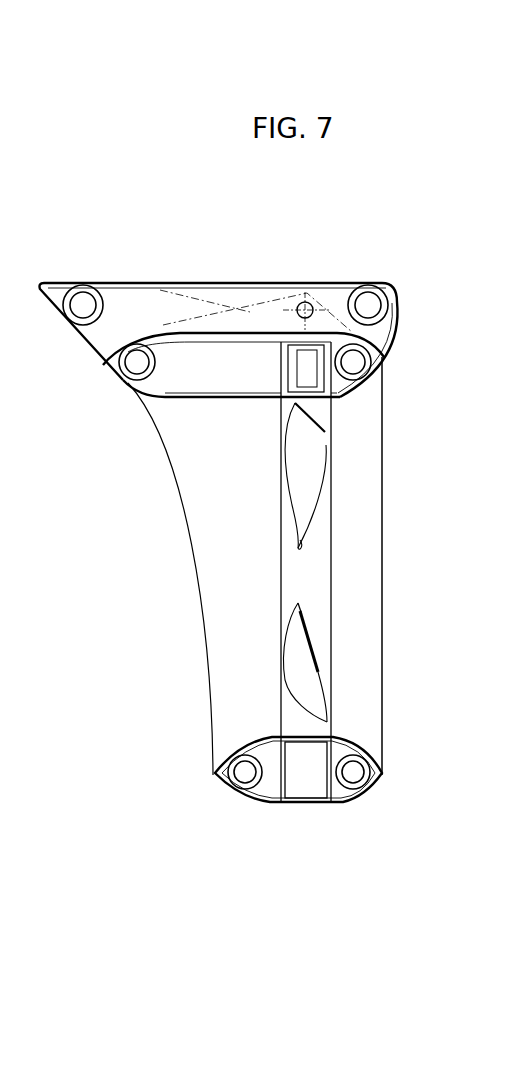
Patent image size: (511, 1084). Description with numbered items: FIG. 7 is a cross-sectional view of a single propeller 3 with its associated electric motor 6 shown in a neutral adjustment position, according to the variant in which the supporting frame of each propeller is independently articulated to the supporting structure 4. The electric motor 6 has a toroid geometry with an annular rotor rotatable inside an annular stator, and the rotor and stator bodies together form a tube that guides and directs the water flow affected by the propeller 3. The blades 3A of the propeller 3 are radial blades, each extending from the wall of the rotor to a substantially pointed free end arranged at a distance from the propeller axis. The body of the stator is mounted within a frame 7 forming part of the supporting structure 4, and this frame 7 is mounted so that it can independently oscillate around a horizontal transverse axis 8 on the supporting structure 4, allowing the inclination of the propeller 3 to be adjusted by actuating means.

The supporting frame 4 is at (158, 284).
The horizontal transverse axis 8 is at (313, 300).
The frame 7 is at (123, 382).
The propeller 3 is at (331, 524).
The blades 3A is at (305, 540).
The electric motor 6 is at (273, 780).